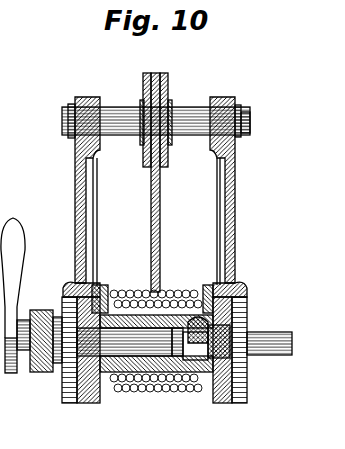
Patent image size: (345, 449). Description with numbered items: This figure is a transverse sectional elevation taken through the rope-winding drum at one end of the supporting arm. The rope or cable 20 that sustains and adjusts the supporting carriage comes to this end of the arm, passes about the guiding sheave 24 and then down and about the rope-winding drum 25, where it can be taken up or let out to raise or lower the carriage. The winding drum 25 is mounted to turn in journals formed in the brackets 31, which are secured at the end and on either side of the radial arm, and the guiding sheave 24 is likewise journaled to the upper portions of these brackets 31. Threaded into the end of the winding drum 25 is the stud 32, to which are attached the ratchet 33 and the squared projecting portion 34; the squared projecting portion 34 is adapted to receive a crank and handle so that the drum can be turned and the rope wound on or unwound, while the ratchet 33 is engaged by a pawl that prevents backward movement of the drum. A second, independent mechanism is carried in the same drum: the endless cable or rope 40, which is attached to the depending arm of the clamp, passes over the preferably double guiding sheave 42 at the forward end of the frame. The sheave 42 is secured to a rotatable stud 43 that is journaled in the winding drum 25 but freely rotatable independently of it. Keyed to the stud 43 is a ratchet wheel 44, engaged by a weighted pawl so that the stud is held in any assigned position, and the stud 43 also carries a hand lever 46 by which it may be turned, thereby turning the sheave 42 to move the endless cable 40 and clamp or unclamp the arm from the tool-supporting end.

The rope or cable 20 is at (160, 224).
The guiding sheave 24 is at (168, 92).
The rope-winding drum 25 is at (110, 297).
The brackets 31 is at (76, 222).
The stud 32 is at (230, 332).
The ratchet 33 is at (232, 313).
The squared projecting portion 34 is at (278, 356).
The endless cable or rope 40 is at (36, 373).
The double guiding sheave 42 is at (43, 375).
The rotatable stud 43 is at (140, 348).
The ratchet wheel 44 is at (63, 297).
The hand lever 46 is at (14, 228).